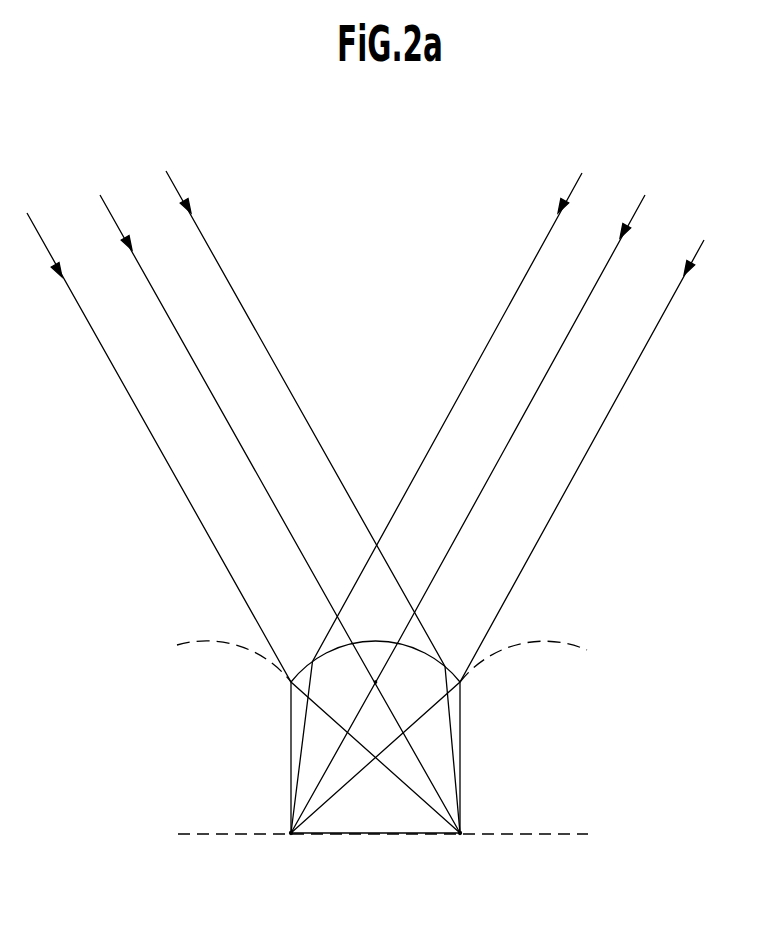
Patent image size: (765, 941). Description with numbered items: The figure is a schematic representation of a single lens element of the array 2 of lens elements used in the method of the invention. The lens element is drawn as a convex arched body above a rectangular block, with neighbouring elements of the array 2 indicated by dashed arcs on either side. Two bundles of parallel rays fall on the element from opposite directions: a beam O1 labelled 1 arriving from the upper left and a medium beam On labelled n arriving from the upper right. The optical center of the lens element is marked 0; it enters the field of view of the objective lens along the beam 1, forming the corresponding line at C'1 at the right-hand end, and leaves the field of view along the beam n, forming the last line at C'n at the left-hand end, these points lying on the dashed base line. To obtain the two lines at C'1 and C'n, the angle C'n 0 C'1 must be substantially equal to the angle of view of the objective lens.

The beam O1 1 is at (243, 496).
The beam On n is at (497, 500).
The array 2 is at (382, 695).
The optical center 0 is at (382, 686).
The first partial image point C'n is at (285, 850).
The last image point C'1 is at (459, 850).